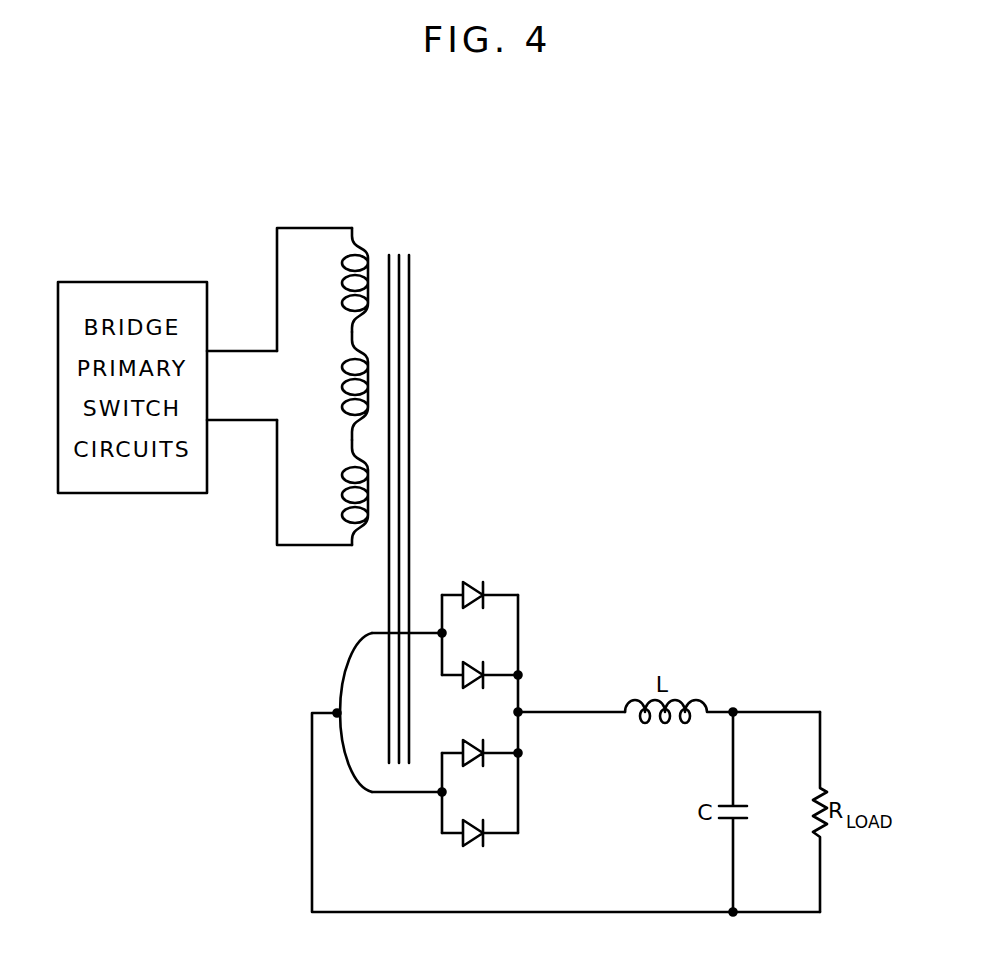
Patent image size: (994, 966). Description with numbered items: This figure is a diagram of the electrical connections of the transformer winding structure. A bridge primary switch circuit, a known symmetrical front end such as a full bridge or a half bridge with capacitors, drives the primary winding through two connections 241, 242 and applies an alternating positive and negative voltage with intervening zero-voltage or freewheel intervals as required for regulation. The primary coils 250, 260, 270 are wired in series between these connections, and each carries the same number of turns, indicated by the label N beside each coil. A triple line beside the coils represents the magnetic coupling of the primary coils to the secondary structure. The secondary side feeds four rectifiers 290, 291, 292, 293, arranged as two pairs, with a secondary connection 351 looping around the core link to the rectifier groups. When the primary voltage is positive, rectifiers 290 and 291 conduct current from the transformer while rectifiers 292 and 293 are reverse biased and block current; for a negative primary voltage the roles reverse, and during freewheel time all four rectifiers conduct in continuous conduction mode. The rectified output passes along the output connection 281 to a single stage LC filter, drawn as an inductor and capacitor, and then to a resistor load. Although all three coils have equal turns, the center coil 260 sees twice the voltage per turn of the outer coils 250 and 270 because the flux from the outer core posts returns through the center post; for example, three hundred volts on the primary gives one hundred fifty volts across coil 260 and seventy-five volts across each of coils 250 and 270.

The first primary lead 241 is at (237, 350).
The second primary lead 242 is at (237, 421).
The primary coil 250 is at (366, 253).
The center primary coil 260 is at (368, 366).
The primary coil 270 is at (368, 466).
The output lead 281 is at (522, 711).
The rectifier 290 is at (471, 586).
The rectifier 291 is at (471, 666).
The rectifier 292 is at (473, 764).
The rectifier 293 is at (473, 845).
The secondary winding lead 351 is at (337, 712).